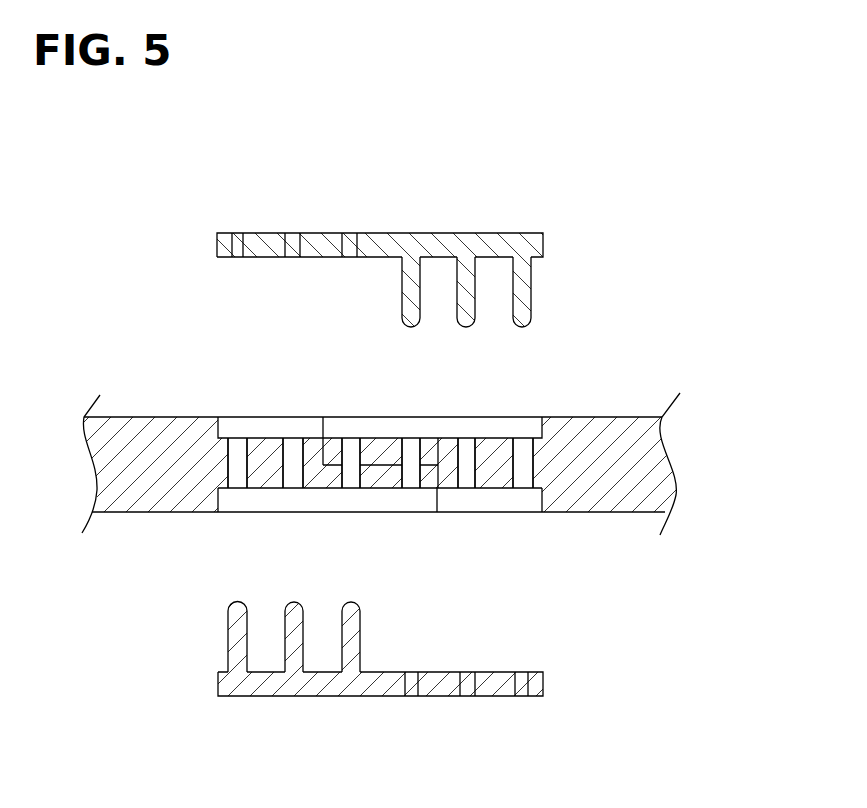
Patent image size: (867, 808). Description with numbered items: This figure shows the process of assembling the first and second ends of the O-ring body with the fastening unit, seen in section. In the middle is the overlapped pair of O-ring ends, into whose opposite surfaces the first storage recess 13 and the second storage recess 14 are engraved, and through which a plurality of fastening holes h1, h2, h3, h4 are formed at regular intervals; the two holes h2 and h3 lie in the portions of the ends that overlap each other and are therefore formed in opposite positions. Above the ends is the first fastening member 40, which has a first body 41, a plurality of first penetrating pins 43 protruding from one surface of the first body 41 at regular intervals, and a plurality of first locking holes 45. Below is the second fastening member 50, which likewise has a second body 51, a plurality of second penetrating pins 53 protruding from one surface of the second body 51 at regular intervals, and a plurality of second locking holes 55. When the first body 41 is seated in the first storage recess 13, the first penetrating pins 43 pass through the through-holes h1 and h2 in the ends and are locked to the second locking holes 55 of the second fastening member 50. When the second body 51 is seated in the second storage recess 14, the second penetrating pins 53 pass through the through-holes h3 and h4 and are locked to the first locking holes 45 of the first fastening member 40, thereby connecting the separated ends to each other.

The first fastening member 40 is at (410, 237).
The first body 41 is at (380, 212).
The first penetrating pins 43 is at (528, 285).
The first locking holes 45 is at (292, 233).
The first storage recess 13 is at (381, 471).
The second storage recess 14 is at (423, 502).
The fastening hole h1 is at (546, 436).
The fastening hole h2 is at (410, 478).
The fastening hole h3 is at (352, 478).
The fastening hole h4 is at (287, 489).
The second fastening member 50 is at (361, 692).
The second body 51 is at (389, 684).
The second penetrating pins 53 is at (227, 645).
The second locking holes 55 is at (520, 677).